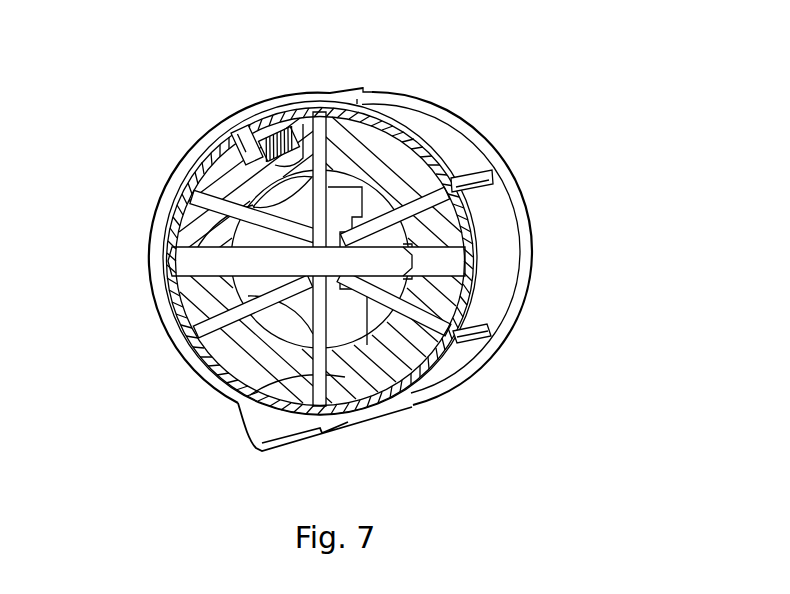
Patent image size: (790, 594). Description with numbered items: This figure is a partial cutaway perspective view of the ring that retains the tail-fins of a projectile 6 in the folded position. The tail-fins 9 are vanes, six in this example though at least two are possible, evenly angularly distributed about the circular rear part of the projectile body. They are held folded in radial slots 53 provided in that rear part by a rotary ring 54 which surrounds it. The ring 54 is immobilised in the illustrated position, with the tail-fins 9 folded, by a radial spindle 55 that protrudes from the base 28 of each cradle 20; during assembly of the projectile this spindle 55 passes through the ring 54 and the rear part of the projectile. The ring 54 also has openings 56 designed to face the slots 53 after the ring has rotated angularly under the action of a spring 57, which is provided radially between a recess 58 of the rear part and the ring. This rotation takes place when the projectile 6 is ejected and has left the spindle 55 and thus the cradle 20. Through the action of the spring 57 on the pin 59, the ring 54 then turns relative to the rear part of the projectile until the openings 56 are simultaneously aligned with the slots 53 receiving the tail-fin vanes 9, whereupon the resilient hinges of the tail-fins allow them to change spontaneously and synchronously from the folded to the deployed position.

The projectile 6 is at (540, 237).
The tail-fins 9 is at (430, 276).
The cradle 20 is at (160, 340).
The base 28 is at (162, 281).
The radial slots 53 is at (493, 170).
The rotary ring 54 is at (416, 398).
The radial spindle 55 is at (190, 258).
The openings 56 is at (470, 197).
The spring 57 is at (258, 126).
The recess 58 is at (299, 125).
The pin 59 is at (247, 118).